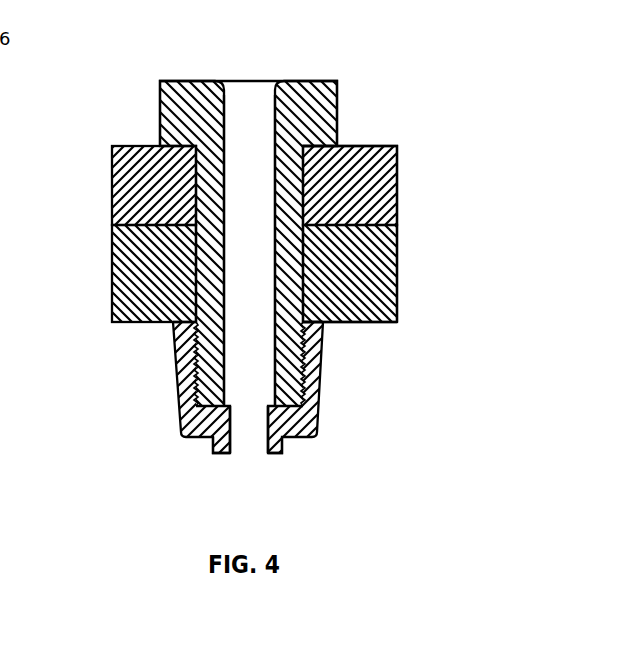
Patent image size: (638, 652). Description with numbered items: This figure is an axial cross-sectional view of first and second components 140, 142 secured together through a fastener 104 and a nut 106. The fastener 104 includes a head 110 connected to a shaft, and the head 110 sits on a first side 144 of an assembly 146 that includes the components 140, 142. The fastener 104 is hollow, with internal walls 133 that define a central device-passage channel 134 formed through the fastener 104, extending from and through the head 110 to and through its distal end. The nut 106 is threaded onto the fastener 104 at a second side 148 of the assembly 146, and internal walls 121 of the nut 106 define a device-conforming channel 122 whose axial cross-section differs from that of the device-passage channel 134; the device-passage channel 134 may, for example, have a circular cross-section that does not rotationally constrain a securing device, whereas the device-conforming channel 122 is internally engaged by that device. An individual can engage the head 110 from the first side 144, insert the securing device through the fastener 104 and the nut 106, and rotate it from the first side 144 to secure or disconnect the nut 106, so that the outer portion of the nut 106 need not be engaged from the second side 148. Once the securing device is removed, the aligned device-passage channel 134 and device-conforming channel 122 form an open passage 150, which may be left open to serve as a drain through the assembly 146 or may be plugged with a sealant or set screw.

The fastener 104 is at (348, 92).
The nut 106 is at (338, 408).
The head 110 is at (160, 114).
The internal walls 121 is at (205, 431).
The device-conforming channel 122 is at (255, 442).
The internal walls 133 is at (231, 130).
The device-passage channel 134 is at (252, 110).
The first component 140 is at (112, 186).
The second component 142 is at (112, 276).
The first side 144 is at (358, 128).
The assembly 146 is at (406, 147).
The second side 148 is at (364, 345).
The open passage 150 is at (242, 436).